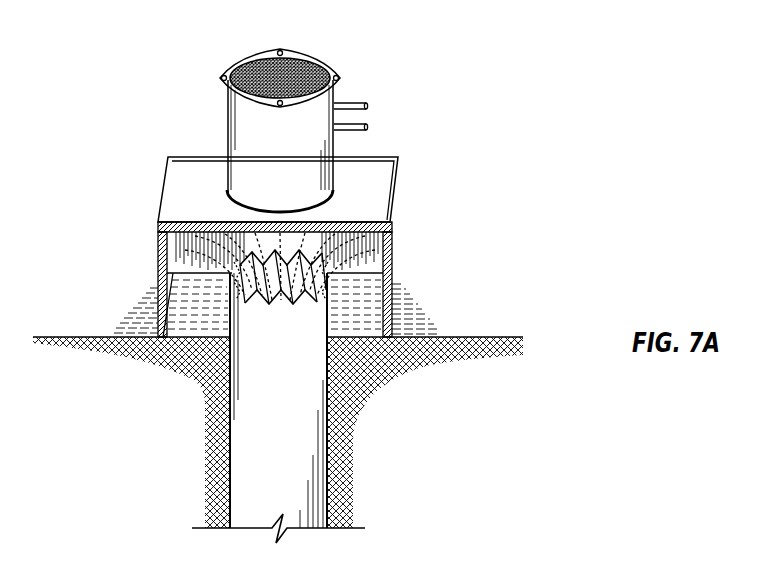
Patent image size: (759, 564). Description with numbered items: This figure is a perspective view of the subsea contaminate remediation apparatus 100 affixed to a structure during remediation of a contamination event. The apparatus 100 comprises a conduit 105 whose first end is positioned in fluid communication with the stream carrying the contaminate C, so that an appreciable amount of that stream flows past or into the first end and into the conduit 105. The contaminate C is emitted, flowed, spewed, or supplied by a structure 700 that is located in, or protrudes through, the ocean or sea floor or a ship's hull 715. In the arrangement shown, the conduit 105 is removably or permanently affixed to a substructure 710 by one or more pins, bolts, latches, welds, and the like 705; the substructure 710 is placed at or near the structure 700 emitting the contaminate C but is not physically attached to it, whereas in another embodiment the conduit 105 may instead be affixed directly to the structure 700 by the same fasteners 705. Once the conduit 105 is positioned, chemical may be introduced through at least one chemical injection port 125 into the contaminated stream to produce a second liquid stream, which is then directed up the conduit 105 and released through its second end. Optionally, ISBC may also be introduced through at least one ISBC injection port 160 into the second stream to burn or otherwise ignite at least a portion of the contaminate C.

The apparatus 100 is at (116, 60).
The conduit 105 is at (226, 130).
The ISBC injection port 160 is at (351, 103).
The chemical injection port 125 is at (358, 133).
The pins, bolts, latches, welds, and the like 705 is at (333, 194).
The substructure 710 is at (157, 268).
The structure 700 is at (223, 405).
The ocean/sea floor, or a ship's hull 715 is at (472, 337).
The contaminate C is at (336, 248).